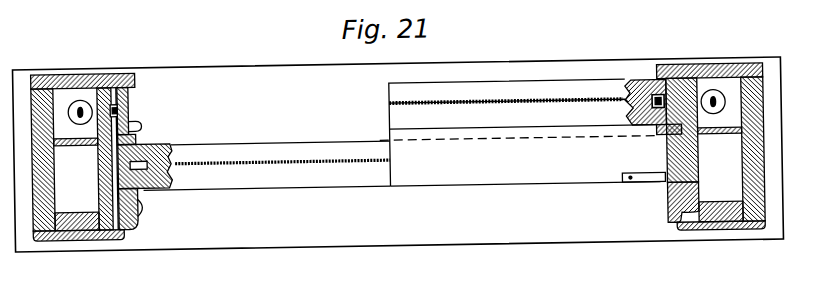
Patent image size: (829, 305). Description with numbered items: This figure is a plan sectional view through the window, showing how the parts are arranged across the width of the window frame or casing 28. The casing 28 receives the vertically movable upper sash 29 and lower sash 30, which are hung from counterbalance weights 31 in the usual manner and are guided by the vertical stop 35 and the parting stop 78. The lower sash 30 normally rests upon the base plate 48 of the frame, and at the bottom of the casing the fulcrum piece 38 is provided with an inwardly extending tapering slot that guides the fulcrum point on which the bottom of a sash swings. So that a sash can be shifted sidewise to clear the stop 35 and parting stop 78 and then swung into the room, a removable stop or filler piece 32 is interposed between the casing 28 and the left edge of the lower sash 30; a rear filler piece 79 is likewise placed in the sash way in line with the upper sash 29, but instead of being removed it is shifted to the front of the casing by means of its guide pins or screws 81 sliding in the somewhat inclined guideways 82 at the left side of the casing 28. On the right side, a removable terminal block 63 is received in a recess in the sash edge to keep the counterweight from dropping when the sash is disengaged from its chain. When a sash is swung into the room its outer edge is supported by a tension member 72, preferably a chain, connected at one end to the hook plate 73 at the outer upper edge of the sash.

The window frame or casing 28 is at (84, 157).
The upper sash 29 is at (496, 119).
The lower sash 30 is at (403, 173).
The counterbalance weight 31 is at (91, 99).
The removable stop or filler piece 32 is at (146, 188).
The vertical stop 35 is at (139, 213).
The fulcrum piece 38 is at (144, 124).
The base plate 48 is at (331, 239).
The removable terminal block 63 is at (618, 137).
The tension member 72 is at (667, 167).
The hook plate 73 is at (655, 184).
The parting stop 78 is at (138, 134).
The rear filler piece 79 is at (133, 96).
The guide pin or screw 81 is at (129, 107).
The guideway 82 is at (142, 209).